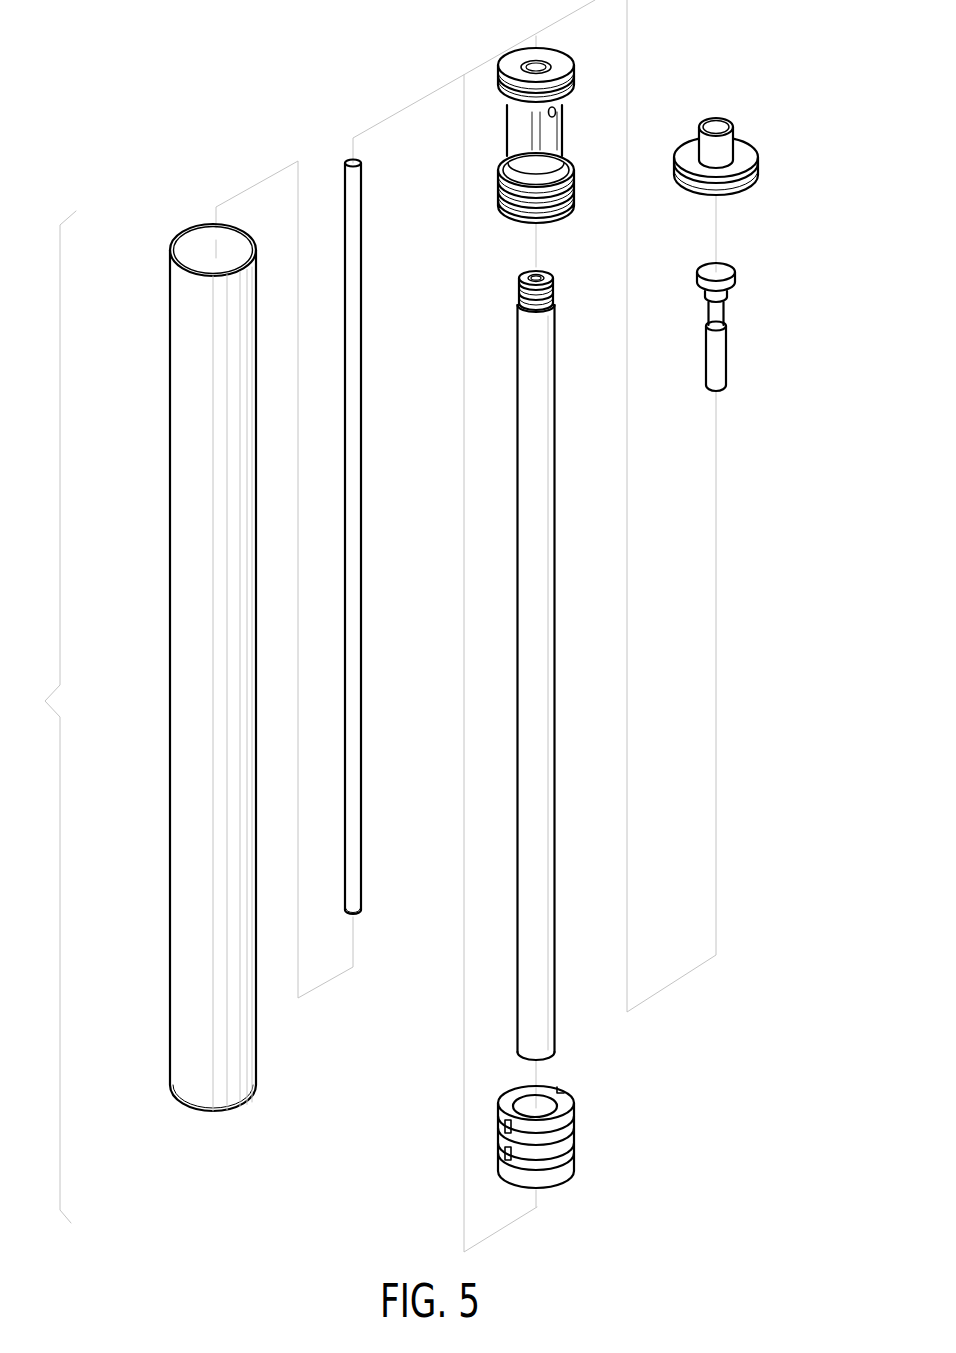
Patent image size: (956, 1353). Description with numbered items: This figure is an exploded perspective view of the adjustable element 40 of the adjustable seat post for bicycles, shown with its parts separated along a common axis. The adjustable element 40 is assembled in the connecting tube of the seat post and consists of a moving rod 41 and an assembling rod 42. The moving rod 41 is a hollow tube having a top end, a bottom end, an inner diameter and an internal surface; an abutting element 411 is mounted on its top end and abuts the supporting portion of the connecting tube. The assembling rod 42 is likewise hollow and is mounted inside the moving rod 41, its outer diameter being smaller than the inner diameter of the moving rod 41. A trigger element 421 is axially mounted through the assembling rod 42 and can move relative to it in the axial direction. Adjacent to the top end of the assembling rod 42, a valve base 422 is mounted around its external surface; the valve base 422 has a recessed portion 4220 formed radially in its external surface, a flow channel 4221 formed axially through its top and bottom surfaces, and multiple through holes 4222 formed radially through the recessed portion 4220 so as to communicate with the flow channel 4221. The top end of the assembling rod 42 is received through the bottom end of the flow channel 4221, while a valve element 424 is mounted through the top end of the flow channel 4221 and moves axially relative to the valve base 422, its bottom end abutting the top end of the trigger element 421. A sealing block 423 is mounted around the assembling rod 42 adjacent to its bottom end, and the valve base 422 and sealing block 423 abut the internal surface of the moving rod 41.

The adjustable element 40 is at (166, 290).
The moving rod 41 is at (193, 435).
The assembling rod 42 is at (540, 772).
The abutting element 411 is at (746, 150).
The trigger element 421 is at (352, 756).
The valve base 422 is at (541, 119).
The sealing block 423 is at (556, 1147).
The valve element 424 is at (714, 357).
The recessed portion 4220 is at (524, 140).
The flow channel 4221 is at (533, 62).
The through holes 4222 is at (557, 112).